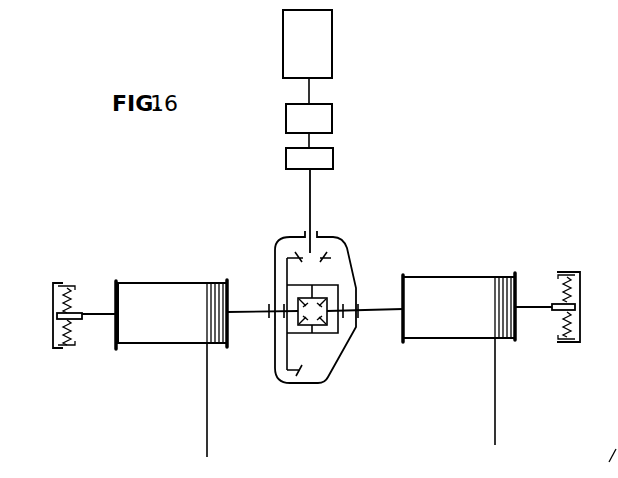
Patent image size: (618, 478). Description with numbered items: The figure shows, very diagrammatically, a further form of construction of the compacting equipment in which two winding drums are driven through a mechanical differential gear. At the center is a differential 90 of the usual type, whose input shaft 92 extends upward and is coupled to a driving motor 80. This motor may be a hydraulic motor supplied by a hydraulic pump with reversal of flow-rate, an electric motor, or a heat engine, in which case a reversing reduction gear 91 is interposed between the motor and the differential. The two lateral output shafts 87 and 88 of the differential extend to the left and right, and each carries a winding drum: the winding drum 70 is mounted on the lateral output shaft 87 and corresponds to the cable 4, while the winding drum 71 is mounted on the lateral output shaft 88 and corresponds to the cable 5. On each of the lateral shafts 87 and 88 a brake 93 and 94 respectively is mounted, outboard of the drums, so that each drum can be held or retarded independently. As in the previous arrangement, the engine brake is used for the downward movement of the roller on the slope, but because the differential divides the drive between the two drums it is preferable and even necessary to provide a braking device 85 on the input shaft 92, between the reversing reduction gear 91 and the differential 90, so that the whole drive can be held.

The driving motor 80 is at (296, 53).
The reversing reduction gear 91 is at (320, 128).
The braking device 85 is at (319, 167).
The input shaft 92 is at (311, 193).
The differential 90 is at (276, 249).
The lateral output shaft 87 is at (249, 312).
The lateral output shaft 88 is at (374, 310).
The winding drum 70 is at (152, 323).
The winding drum 71 is at (437, 317).
The brake 93 is at (50, 311).
The brake 94 is at (582, 305).
The cable 4 is at (213, 400).
The cable 5 is at (501, 391).